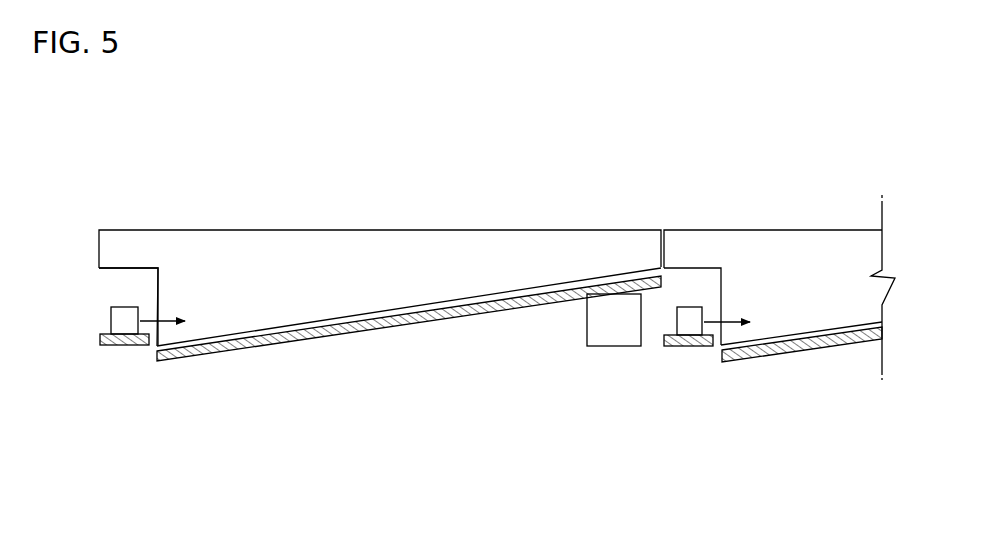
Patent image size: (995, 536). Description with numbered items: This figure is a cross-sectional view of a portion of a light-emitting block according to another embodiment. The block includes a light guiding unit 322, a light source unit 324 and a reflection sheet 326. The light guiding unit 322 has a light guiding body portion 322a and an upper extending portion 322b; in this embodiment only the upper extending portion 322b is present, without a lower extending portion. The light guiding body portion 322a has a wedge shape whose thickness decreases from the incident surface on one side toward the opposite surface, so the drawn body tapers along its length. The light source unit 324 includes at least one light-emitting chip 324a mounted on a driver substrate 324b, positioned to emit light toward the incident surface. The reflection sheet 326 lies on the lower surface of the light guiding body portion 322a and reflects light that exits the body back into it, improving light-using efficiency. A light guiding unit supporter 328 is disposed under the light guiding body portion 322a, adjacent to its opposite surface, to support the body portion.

The light guiding unit 322 is at (476, 216).
The light guiding body portion 322a is at (386, 292).
The upper extending portion 322b is at (129, 247).
The light source unit 324 is at (401, 396).
The light-emitting chip 324a is at (127, 326).
The driver substrate 324b is at (107, 346).
The reflection sheet 326 is at (485, 303).
The light guiding unit supporter 328 is at (617, 334).